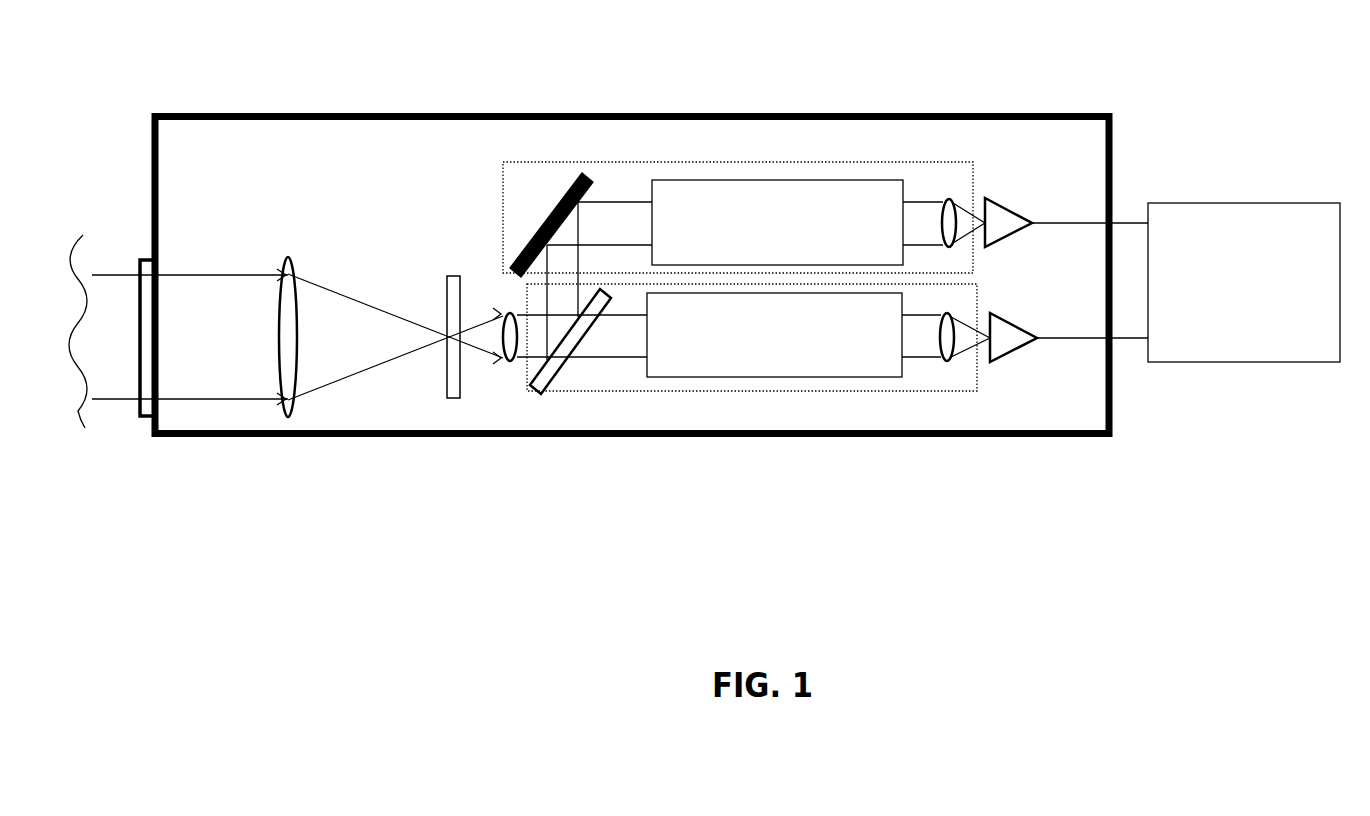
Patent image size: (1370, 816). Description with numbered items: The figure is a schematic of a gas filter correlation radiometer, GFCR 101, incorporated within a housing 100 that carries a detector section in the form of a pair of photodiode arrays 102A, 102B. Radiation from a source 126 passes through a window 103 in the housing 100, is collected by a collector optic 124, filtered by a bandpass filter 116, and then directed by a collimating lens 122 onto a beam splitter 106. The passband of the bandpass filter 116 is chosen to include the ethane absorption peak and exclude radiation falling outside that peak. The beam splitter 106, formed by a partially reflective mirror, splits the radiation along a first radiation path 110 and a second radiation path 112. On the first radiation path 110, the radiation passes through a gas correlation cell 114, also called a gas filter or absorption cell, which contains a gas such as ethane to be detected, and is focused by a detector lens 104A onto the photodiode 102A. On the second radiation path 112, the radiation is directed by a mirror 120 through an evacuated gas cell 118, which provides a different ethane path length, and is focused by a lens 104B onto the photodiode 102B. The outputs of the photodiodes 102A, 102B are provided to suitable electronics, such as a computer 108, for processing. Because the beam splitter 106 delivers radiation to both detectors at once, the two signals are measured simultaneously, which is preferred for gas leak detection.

The housing 100 is at (337, 113).
The GFCR 101 is at (632, 298).
The photodiode 102A is at (1008, 357).
The photodiode 102B is at (1008, 238).
The window 103 is at (135, 418).
The detector lens 104A is at (948, 357).
The lens 104B is at (953, 197).
The beam splitter 106 is at (558, 367).
The computer 108 is at (1233, 203).
The first radiation path 110 is at (750, 393).
The second radiation path 112 is at (736, 160).
The gas correlation cell 114 is at (802, 377).
The bandpass filter 116 is at (447, 277).
The evacuated gas cell 118 is at (792, 178).
The mirror 120 is at (527, 240).
The collimating lens 122 is at (508, 313).
The collector optic 124 is at (288, 257).
The source 126 is at (83, 235).